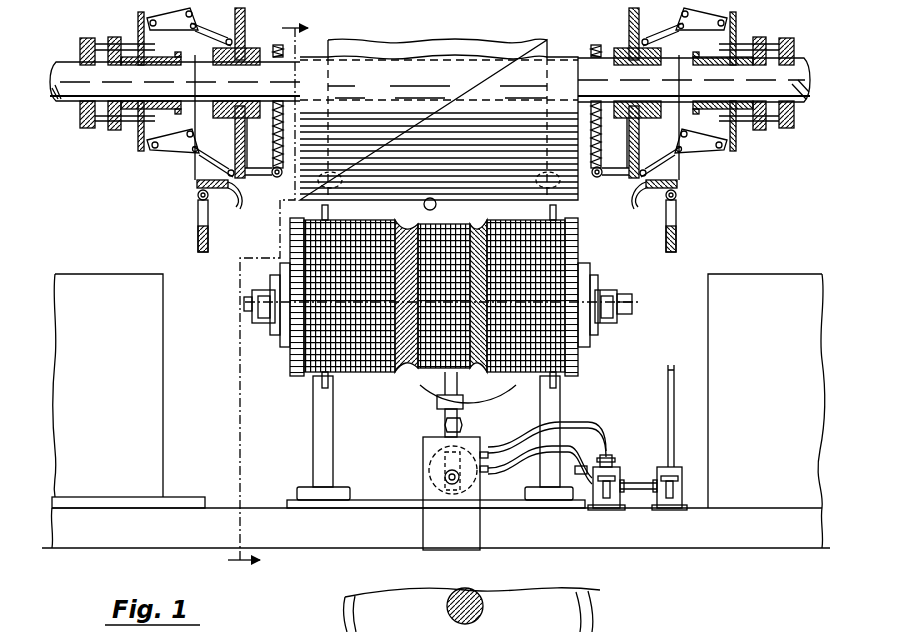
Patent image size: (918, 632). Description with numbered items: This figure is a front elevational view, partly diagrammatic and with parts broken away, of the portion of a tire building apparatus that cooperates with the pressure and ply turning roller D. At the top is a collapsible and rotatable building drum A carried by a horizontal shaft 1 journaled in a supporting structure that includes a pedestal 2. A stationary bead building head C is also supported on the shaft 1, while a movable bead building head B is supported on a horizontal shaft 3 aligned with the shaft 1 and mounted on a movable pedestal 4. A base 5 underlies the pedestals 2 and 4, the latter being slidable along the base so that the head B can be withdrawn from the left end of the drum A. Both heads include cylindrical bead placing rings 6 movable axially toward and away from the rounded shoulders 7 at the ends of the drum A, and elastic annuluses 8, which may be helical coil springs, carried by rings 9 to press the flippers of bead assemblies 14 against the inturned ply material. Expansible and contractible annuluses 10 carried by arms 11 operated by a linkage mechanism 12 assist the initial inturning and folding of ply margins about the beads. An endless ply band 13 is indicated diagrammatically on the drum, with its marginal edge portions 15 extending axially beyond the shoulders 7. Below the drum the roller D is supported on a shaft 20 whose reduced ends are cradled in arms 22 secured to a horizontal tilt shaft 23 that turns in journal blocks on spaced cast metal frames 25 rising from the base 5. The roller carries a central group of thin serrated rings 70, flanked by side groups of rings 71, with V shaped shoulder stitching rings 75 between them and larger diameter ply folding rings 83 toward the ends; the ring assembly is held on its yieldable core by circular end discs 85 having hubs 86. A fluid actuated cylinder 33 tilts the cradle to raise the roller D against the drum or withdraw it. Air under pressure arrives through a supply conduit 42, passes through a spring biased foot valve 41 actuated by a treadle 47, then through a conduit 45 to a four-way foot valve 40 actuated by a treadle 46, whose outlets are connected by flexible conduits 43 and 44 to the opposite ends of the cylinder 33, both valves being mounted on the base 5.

The horizontal shaft 1 is at (794, 102).
The pedestal 2 is at (767, 280).
The horizontal shaft 3 is at (76, 97).
The movable pedestal 4 is at (102, 282).
The base 5 is at (752, 548).
The bead placing rings 6 is at (198, 181).
The drum shoulders 7 is at (439, 171).
The elastic annuluses 8 is at (209, 200).
The rings 9 is at (203, 253).
The expansible and contractible annuluses 10 is at (258, 62).
The arms 11 is at (264, 177).
The linkage mechanism 12 is at (163, 144).
The ply band 13 is at (430, 198).
The bead assemblies 14 is at (240, 208).
The marginal edge portions 15 is at (574, 220).
The shaft 20 is at (605, 290).
The arms 22 is at (256, 324).
The tilt shaft 23 is at (634, 304).
The cast metal frames 25 is at (313, 432).
The cylinder 33 is at (428, 462).
The foot valve 40 is at (612, 510).
The foot valve 41 is at (676, 510).
The supply conduit 42 is at (674, 420).
The flexible conduit 43 is at (508, 458).
The flexible conduit 44 is at (536, 440).
The conduit 45 is at (638, 492).
The treadle 46 is at (612, 454).
The treadle 47 is at (674, 468).
The center rings 70 is at (440, 374).
The side rings 71 is at (352, 374).
The V shaped shoulder stitching rings 75 is at (397, 372).
The ply folding rings 83 is at (321, 384).
The circular end discs 85 is at (578, 344).
The hubs 86 is at (288, 342).
The building drum A is at (352, 56).
The movable bead building head B is at (180, 178).
The stationary bead building head C is at (708, 176).
The pressure and ply turning roller D is at (439, 299).